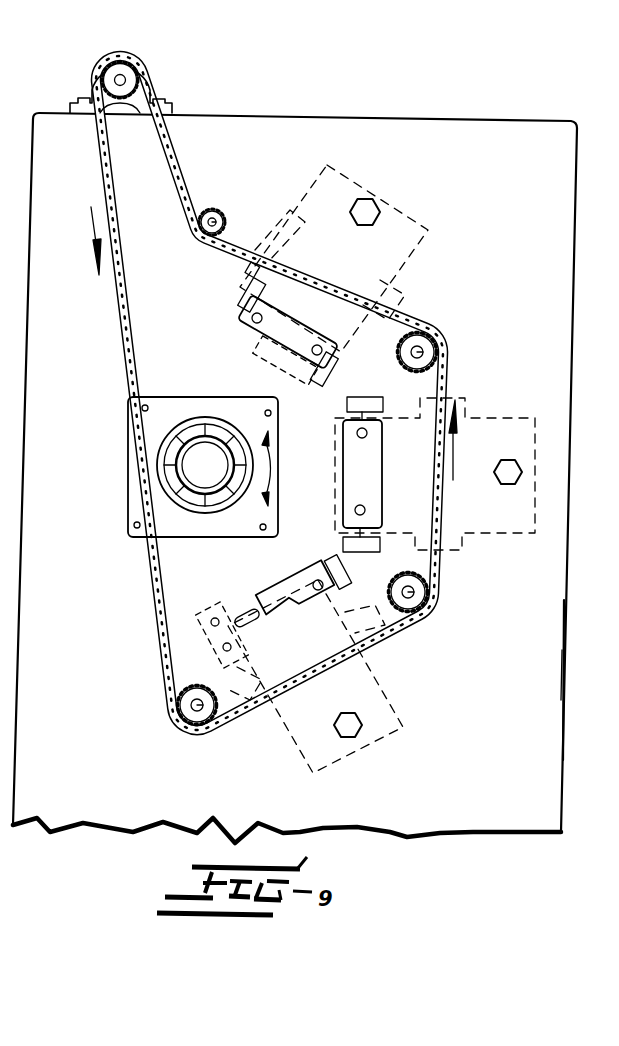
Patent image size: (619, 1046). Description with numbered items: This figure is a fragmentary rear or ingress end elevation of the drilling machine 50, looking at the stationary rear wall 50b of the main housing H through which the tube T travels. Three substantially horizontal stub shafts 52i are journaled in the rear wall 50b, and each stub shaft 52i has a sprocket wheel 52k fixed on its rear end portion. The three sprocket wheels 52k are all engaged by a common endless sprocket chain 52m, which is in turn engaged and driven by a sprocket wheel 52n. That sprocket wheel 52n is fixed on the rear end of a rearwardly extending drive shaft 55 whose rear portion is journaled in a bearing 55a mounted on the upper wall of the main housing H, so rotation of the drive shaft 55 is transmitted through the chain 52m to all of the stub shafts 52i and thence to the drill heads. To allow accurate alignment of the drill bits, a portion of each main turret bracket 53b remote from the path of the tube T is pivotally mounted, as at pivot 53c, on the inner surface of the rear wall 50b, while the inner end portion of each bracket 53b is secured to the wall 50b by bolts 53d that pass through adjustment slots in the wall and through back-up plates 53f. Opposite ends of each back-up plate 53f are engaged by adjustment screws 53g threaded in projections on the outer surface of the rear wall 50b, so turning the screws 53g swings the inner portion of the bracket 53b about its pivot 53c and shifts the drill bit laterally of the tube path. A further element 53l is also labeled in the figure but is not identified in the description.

The drilling machine 50 is at (500, 845).
The rear wall 50b is at (512, 786).
The main housing H is at (566, 668).
The tube T is at (163, 466).
The drive shaft 55 is at (97, 78).
The bearing 55a is at (164, 117).
The sprocket wheel 52n is at (126, 80).
The sprocket wheel 52k is at (206, 212).
The stub shaft 52i is at (214, 222).
The endless sprocket chain 52m is at (153, 578).
The main turret bracket 53b is at (428, 232).
The pivot 53c is at (366, 212).
The bolt 53d is at (252, 320).
The back-up plate 53f is at (240, 332).
The adjustment screw 53g is at (226, 296).
The slot plate 53l is at (278, 358).